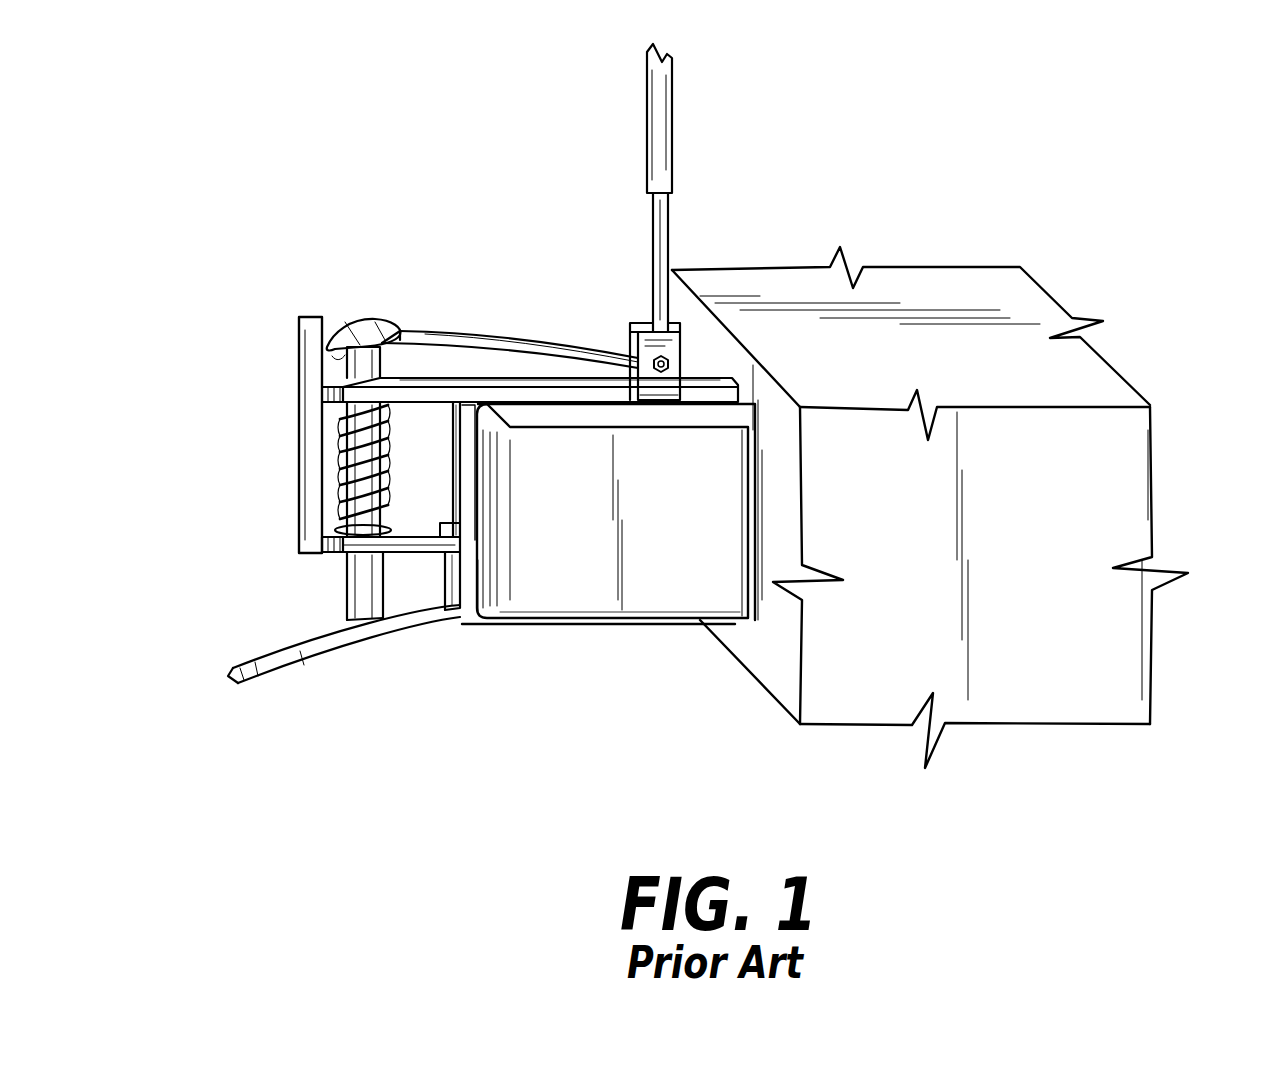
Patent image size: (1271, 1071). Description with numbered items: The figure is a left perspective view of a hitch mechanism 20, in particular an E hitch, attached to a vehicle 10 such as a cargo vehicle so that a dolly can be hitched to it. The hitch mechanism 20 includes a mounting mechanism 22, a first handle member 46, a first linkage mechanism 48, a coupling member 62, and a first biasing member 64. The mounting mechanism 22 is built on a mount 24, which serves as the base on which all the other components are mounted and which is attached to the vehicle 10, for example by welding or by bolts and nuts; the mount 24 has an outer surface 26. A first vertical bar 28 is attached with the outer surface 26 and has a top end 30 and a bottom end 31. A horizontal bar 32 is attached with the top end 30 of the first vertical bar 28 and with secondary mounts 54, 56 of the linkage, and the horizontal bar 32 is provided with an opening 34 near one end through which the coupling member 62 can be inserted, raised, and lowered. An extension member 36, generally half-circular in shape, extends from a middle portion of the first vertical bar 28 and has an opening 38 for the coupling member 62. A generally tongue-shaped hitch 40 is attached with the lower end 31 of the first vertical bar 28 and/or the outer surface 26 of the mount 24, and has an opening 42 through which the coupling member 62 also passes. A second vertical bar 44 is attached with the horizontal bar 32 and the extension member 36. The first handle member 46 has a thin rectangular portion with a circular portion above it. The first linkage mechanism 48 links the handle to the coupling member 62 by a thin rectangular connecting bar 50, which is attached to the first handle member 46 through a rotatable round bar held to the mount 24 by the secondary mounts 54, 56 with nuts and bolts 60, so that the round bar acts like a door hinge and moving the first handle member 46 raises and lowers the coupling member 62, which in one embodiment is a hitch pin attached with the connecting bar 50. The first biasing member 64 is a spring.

The vehicle 10 is at (1130, 484).
The hitch mechanism 20 is at (225, 444).
The mounting mechanism 22 is at (603, 600).
The mount 24 is at (497, 625).
The outer surface 26 is at (480, 605).
The first vertical bar 28 is at (470, 430).
The top end 30 is at (451, 417).
The bottom end 31 is at (455, 604).
The horizontal bar 32 is at (572, 392).
The opening 34 is at (345, 382).
The extension member 36 is at (440, 524).
The opening 38 is at (340, 557).
The hitch 40 is at (293, 662).
The opening 42 is at (344, 617).
The second vertical bar 44 is at (307, 413).
The first handle member 46 is at (668, 228).
The first linkage mechanism 48 is at (537, 322).
The connecting bar 50 is at (463, 330).
The secondary mount 54 is at (640, 323).
The secondary mount 56 is at (658, 388).
The nut and bolt 60 is at (669, 365).
The coupling member 62 is at (370, 317).
The first biasing member 64 is at (343, 467).